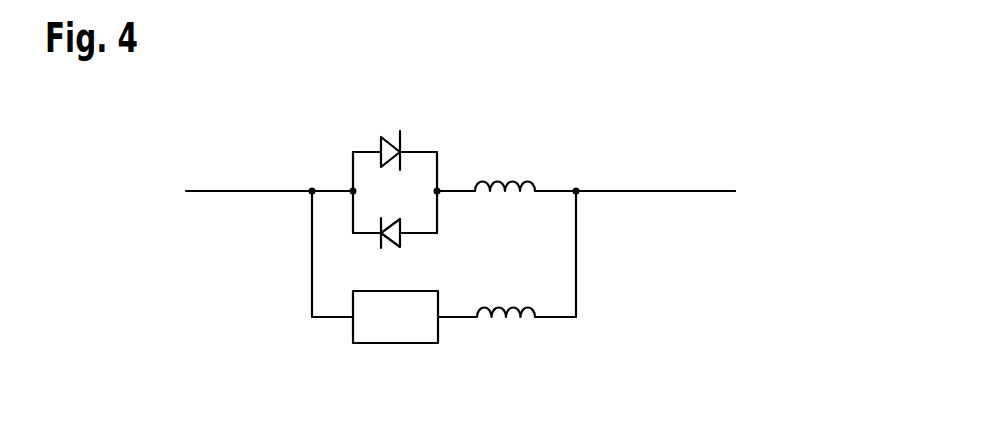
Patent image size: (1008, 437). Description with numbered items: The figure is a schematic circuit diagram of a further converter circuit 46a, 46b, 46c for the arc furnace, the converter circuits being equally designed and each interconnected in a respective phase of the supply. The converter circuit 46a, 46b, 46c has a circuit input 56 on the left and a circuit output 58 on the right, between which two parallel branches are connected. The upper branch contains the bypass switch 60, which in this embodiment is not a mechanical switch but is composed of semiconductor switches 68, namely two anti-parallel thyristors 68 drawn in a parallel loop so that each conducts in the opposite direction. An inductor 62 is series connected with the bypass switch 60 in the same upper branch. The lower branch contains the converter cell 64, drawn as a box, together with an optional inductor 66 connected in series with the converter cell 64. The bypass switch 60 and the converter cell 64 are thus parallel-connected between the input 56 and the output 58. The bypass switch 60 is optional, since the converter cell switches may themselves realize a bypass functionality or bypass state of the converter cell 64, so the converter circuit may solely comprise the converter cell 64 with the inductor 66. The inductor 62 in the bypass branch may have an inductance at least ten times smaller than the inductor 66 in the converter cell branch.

The converter circuit 46a is at (811, 152).
The converter circuit 46b is at (811, 152).
The converter circuit 46c is at (745, 168).
The circuit input 56 is at (222, 189).
The circuit output 58 is at (658, 189).
The bypass switch 60 is at (372, 193).
The inductor 62 is at (526, 189).
The converter cell 64 is at (396, 345).
The inductor 66 is at (530, 309).
The semiconductor switches 68 is at (402, 142).